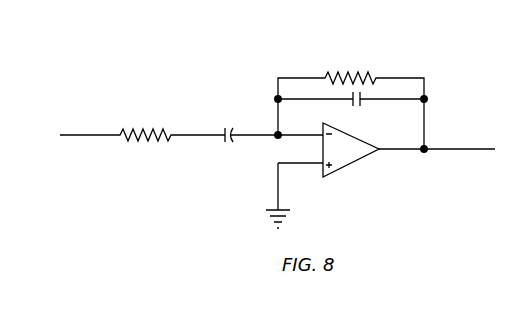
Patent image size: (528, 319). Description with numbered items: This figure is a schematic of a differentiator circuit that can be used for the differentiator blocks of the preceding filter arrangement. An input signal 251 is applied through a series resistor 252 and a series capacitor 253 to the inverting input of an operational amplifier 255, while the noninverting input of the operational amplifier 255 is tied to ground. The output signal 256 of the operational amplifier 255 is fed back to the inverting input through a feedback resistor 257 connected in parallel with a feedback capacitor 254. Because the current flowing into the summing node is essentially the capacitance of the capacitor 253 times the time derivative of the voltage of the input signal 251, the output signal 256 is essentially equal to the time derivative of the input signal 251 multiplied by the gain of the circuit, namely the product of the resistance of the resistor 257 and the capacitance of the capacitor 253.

The input signal 251 is at (86, 137).
The resistor 252 is at (145, 130).
The capacitor 253 is at (226, 138).
The capacitor 254 is at (361, 105).
The operational amplifier 255 is at (347, 170).
The output signal 256 is at (398, 151).
The resistor 257 is at (350, 75).